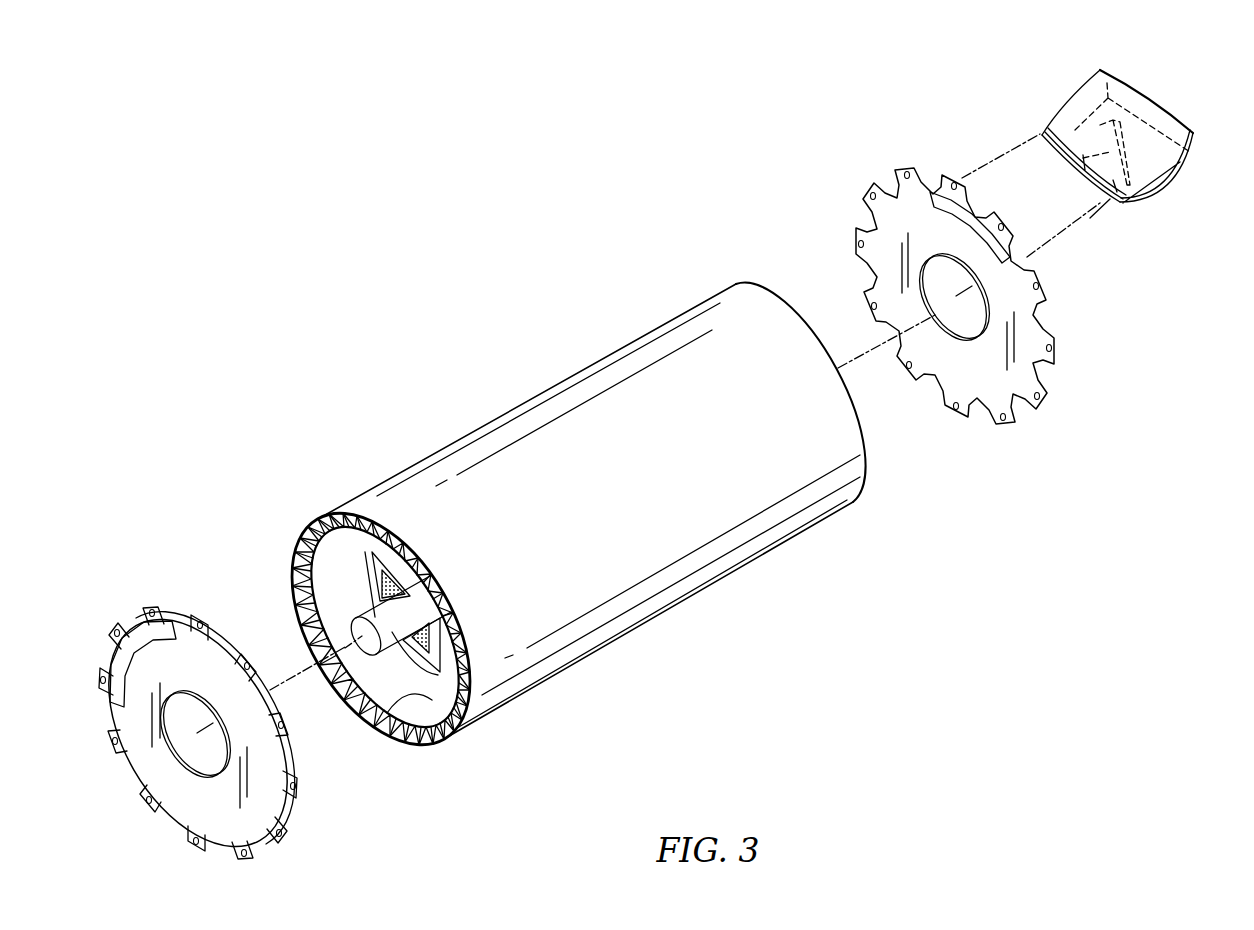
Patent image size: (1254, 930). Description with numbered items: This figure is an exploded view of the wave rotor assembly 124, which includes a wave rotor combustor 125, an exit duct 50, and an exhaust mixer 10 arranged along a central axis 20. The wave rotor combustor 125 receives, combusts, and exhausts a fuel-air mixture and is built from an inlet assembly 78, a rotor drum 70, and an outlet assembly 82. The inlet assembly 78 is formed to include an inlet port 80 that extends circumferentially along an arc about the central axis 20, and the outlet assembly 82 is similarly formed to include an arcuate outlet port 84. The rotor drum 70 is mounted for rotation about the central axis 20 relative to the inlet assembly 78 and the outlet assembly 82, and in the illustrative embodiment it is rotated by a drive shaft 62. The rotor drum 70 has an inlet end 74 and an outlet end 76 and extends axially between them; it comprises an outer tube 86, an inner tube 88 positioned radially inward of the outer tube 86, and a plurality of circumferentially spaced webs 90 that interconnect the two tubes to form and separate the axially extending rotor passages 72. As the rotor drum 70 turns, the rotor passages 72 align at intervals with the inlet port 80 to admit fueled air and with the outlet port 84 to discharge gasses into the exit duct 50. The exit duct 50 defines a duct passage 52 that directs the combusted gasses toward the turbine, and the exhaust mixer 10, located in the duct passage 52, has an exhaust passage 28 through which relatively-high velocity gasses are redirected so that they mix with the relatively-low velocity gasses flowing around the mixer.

The exhaust mixer 10 is at (1141, 132).
The central axis 20 is at (302, 692).
The exhaust passage 28 is at (1108, 200).
The exit duct 50 is at (1125, 145).
The duct passage 52 is at (1082, 152).
The drive shaft 62 is at (420, 634).
The rotor drum 70 is at (388, 466).
The rotor passages 72 is at (312, 530).
The inlet end 74 is at (270, 558).
The outlet end 76 is at (772, 277).
The inlet assembly 78 is at (184, 690).
The inlet port 80 is at (130, 651).
The outlet assembly 82 is at (950, 255).
The outlet port 84 is at (950, 211).
The outer tube 86 is at (548, 604).
The inner tube 88 is at (392, 718).
The webs 90 is at (441, 600).
The wave rotor assembly 124 is at (637, 163).
The wave rotor combustor 125 is at (566, 333).